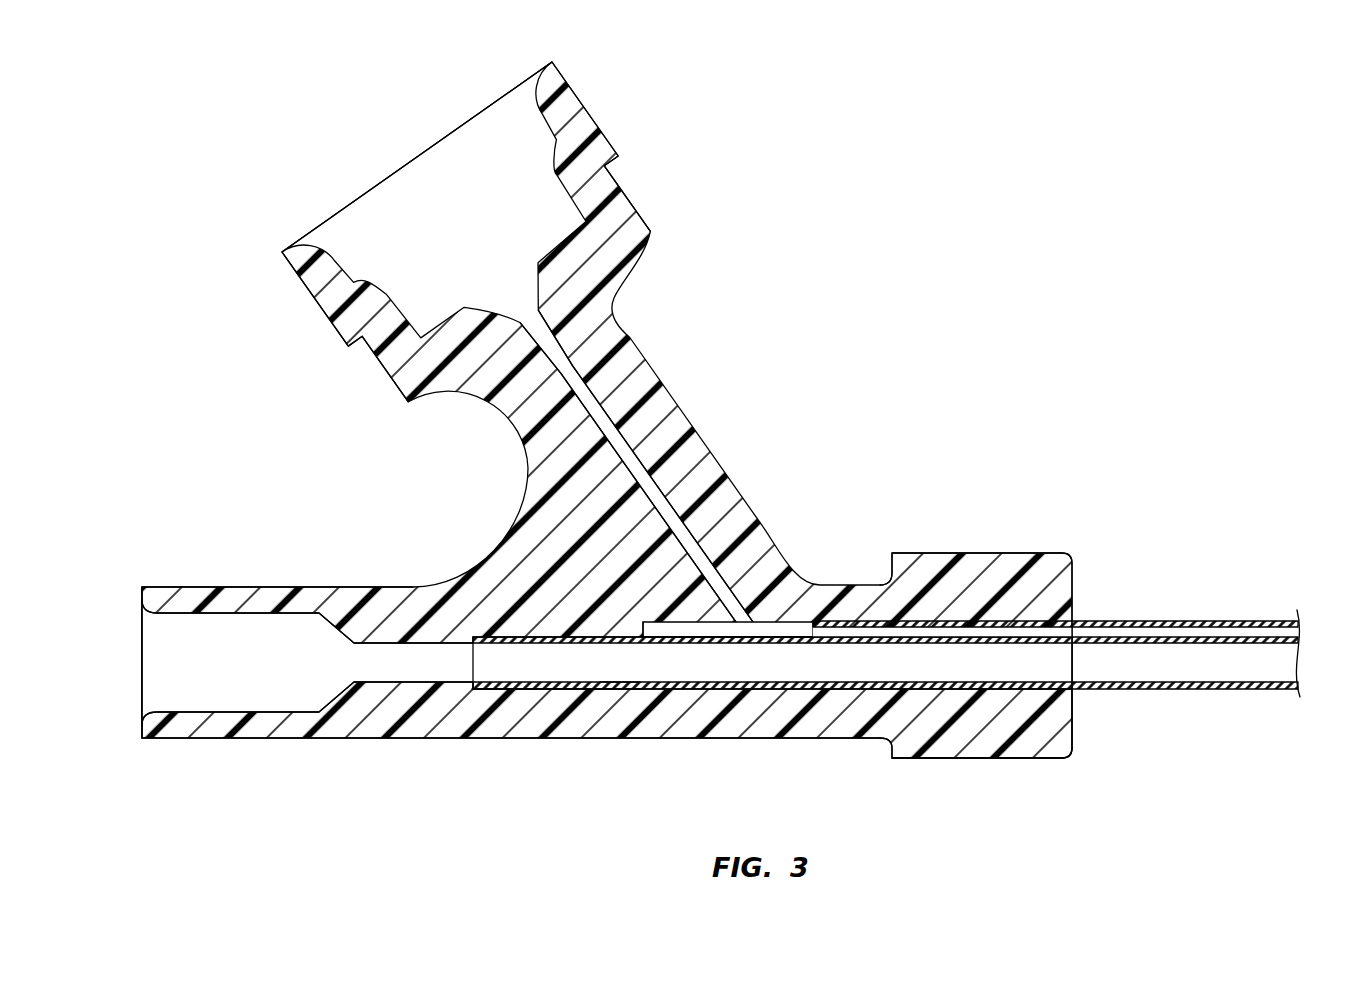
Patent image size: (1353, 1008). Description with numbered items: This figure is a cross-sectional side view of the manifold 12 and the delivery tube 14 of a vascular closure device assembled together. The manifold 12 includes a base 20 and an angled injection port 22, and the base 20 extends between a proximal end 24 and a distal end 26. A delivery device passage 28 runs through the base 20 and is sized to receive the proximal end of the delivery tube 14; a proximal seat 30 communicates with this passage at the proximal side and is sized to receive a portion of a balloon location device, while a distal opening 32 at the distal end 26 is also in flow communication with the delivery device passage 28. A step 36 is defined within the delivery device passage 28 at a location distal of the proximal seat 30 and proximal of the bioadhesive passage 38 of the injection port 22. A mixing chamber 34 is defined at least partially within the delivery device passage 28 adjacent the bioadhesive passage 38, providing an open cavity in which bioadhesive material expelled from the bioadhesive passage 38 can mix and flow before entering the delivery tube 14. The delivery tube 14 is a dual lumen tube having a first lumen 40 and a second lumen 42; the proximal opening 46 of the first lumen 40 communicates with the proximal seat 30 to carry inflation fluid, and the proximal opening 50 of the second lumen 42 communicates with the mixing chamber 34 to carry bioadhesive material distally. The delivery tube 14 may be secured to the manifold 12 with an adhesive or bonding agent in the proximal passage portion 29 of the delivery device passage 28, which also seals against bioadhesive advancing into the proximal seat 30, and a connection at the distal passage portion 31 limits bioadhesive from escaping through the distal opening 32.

The manifold 12 is at (772, 338).
The delivery tube 14 is at (1175, 617).
The base 20 is at (737, 748).
The injection port 22 is at (620, 114).
The proximal end 24 is at (164, 739).
The distal end 26 is at (1048, 760).
The delivery device passage 28 is at (618, 678).
The proximal passage portion 29 is at (472, 777).
The proximal seat 30 is at (263, 687).
The distal passage portion 31 is at (830, 808).
The distal opening 32 is at (1073, 690).
The mixing chamber 34 is at (765, 620).
The step 36 is at (643, 626).
The bioadhesive passage 38 is at (632, 322).
The first lumen 40 is at (943, 672).
The second lumen 42 is at (1103, 633).
The proximal opening 46 is at (472, 686).
The proximal opening 50 is at (795, 625).